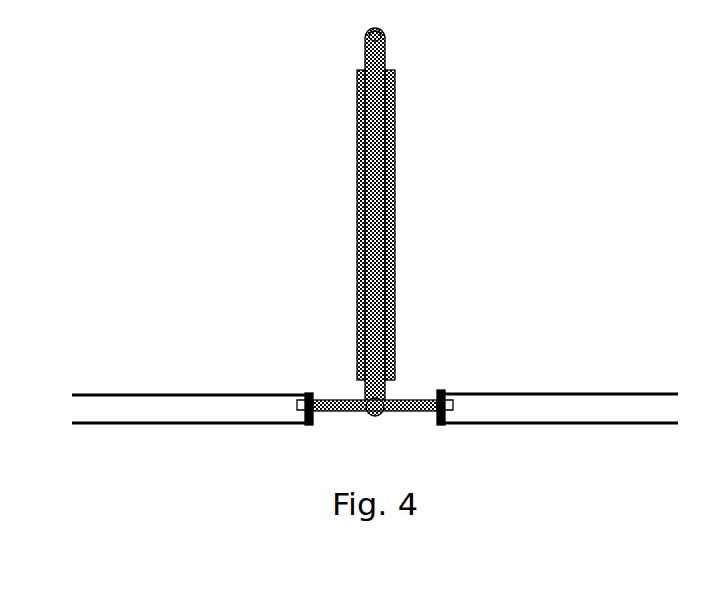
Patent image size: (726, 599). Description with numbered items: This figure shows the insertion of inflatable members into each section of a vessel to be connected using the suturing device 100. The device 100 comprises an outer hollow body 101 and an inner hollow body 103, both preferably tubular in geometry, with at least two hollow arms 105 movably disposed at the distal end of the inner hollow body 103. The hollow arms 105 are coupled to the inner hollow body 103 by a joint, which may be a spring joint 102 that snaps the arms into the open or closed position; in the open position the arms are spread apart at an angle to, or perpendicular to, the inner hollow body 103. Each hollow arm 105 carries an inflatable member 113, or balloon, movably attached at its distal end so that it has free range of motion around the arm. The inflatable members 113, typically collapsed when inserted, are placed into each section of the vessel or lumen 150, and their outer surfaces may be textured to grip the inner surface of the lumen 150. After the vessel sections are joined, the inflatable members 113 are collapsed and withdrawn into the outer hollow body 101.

The suturing device 100 is at (300, 190).
The outer hollow body 101 is at (398, 122).
The spring joint 102 is at (365, 417).
The inner hollow body 103 is at (380, 287).
The hollow arm 105 is at (397, 393).
The inflatable member 113 is at (290, 403).
The lumen 150 is at (444, 389).